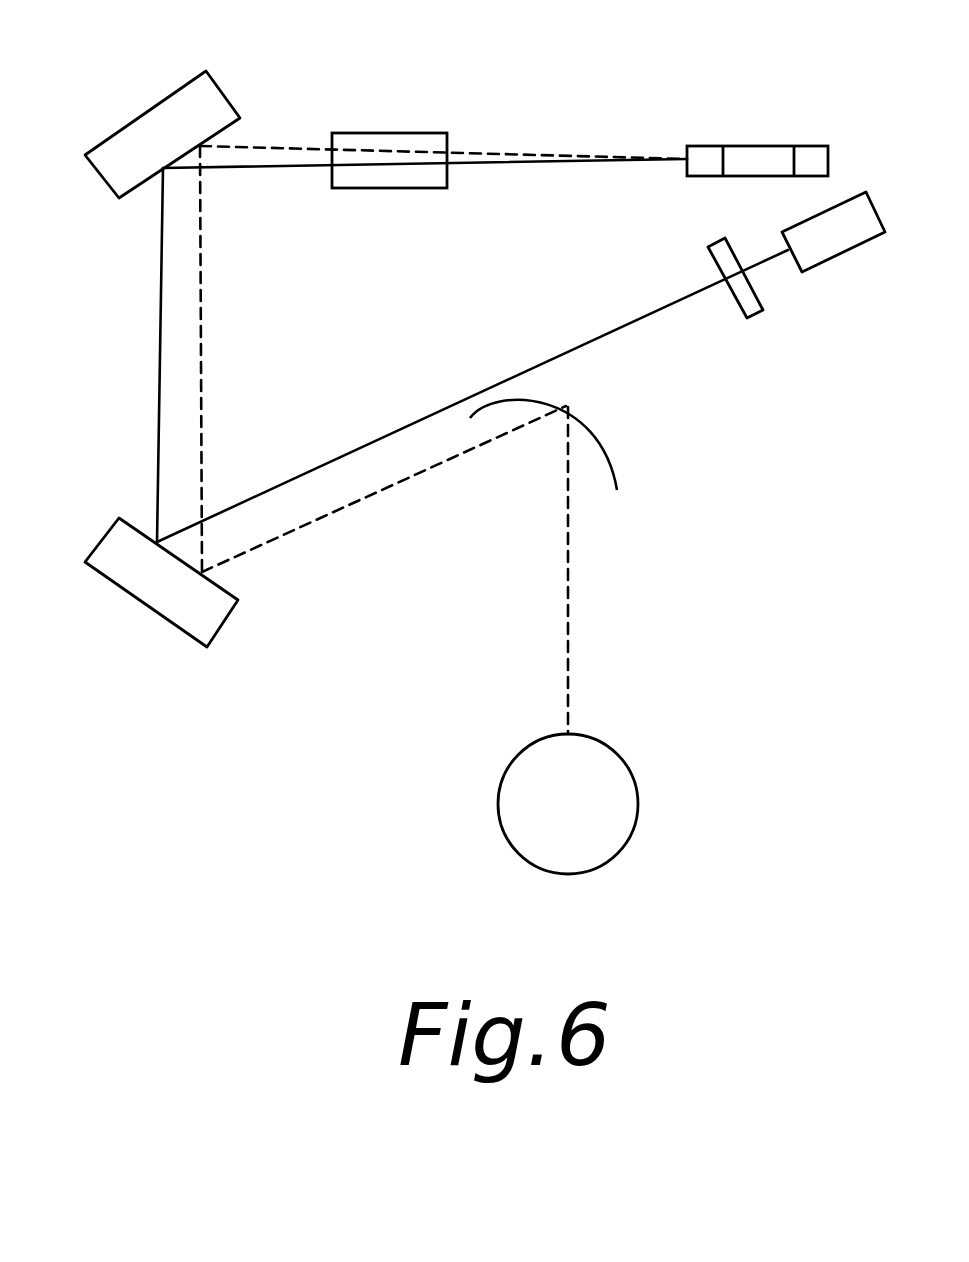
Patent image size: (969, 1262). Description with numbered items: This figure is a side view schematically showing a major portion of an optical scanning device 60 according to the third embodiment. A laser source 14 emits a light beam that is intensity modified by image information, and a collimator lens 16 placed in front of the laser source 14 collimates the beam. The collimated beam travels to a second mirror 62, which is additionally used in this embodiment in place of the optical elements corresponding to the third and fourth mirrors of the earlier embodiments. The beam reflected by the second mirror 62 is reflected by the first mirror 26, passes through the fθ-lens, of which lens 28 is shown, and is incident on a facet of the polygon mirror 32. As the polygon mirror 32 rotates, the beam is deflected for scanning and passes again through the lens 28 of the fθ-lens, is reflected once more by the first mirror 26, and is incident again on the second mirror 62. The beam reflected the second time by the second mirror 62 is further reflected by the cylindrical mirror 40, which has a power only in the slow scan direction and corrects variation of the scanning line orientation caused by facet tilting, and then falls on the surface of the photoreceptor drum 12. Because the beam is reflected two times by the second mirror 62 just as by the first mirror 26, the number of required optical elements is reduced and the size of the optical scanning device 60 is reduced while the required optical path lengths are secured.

The photoreceptor drum 12 is at (508, 762).
The laser source 14 is at (845, 250).
The collimator lens 16 is at (757, 313).
The first mirror 26 is at (127, 122).
The lens 28 is at (398, 132).
The polygon mirror 32 is at (760, 137).
The cylindrical mirror 40 is at (617, 473).
The optical scanning device 60 is at (555, 117).
The second mirror 62 is at (118, 587).